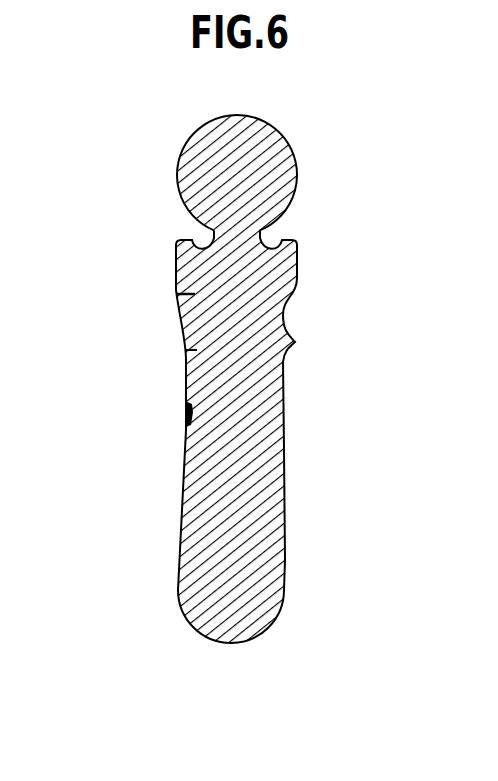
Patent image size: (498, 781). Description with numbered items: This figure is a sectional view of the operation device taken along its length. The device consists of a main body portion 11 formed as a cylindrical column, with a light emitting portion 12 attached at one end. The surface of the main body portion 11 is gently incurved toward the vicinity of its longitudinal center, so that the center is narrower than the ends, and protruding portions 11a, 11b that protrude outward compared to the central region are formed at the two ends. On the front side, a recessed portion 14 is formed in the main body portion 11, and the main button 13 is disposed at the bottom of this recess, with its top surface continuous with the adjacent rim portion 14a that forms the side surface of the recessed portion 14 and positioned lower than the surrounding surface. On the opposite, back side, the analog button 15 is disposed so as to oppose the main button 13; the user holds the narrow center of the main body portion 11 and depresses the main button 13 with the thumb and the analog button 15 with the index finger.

The main body portion 11 is at (284, 457).
The protruding portion 11a is at (175, 280).
The protruding portion 11b is at (177, 595).
The light emitting portion 12 is at (297, 178).
The main button 13 is at (187, 352).
The recessed portion 14 is at (164, 309).
The rim portion 14a is at (185, 353).
The analog button 15 is at (295, 342).